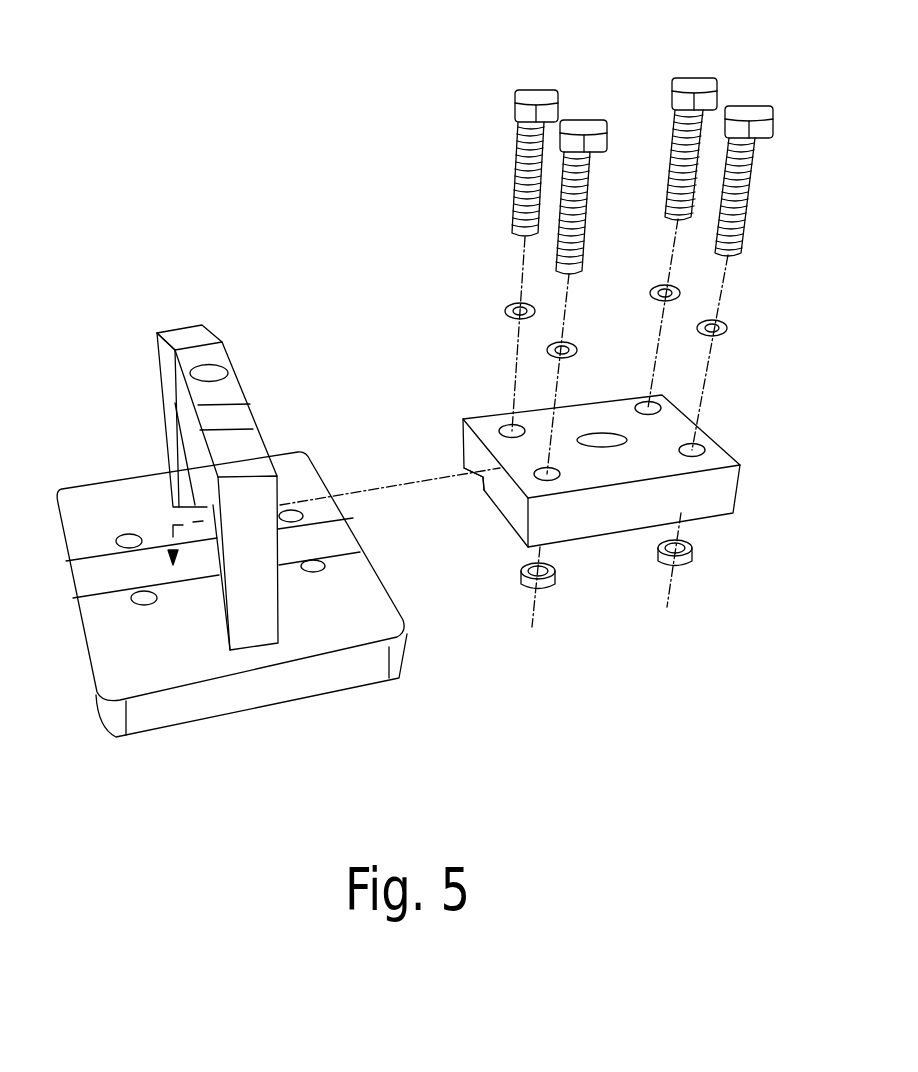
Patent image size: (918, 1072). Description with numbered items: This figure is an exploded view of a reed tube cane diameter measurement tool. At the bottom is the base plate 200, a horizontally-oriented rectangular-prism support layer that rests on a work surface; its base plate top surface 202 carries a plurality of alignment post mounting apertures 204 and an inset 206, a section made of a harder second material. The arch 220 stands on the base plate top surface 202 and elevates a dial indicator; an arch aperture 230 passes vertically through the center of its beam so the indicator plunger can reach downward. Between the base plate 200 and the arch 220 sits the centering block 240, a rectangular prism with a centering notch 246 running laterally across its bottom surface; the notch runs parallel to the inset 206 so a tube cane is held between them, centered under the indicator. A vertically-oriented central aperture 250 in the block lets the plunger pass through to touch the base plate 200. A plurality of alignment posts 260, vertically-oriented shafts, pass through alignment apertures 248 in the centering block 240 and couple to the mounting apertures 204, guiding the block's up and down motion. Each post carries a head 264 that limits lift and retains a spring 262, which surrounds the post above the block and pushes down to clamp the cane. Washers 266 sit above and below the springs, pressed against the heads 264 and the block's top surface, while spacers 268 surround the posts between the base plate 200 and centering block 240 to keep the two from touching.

The base plate 200 is at (130, 727).
The base plate top surface 202 is at (380, 616).
The alignment post mounting apertures 204 is at (129, 601).
The inset 206 is at (93, 597).
The arch 220 is at (167, 373).
The arch aperture 230 is at (217, 362).
The centering block 240 is at (705, 505).
The centering notch 246 is at (494, 487).
The alignment apertures 248 is at (533, 474).
The central aperture 250 is at (610, 446).
The alignment posts 260 is at (590, 120).
The spring 262 is at (674, 137).
The head 264 is at (684, 78).
The washers 266 is at (586, 149).
The spacers 268 is at (555, 584).